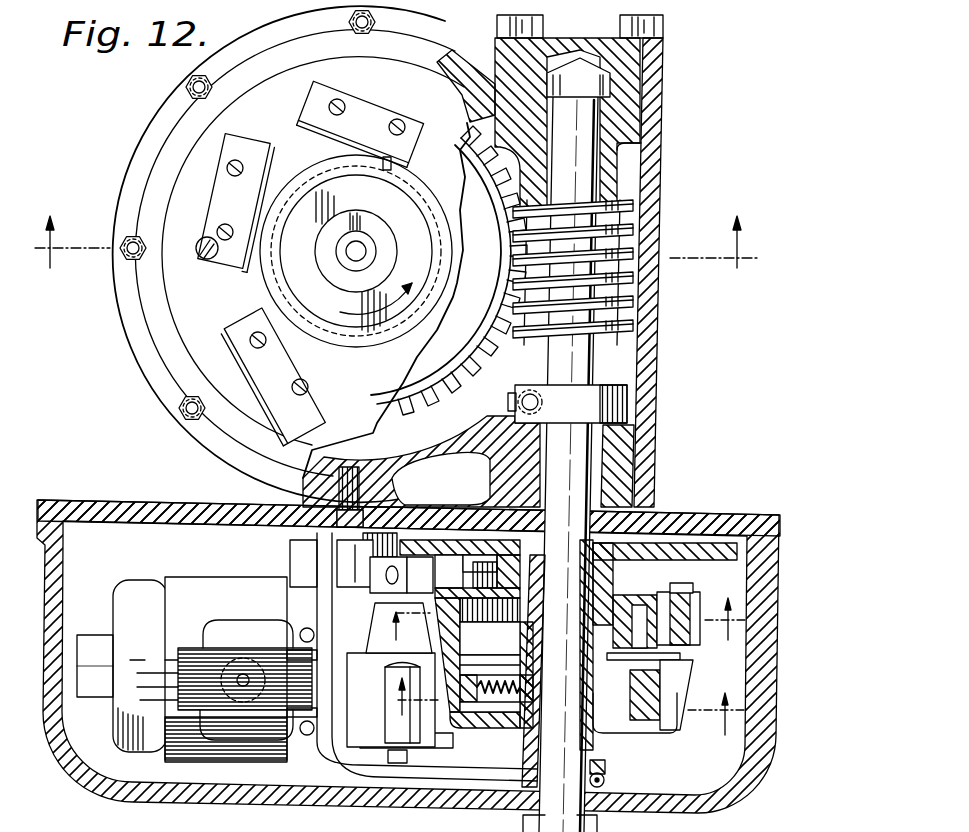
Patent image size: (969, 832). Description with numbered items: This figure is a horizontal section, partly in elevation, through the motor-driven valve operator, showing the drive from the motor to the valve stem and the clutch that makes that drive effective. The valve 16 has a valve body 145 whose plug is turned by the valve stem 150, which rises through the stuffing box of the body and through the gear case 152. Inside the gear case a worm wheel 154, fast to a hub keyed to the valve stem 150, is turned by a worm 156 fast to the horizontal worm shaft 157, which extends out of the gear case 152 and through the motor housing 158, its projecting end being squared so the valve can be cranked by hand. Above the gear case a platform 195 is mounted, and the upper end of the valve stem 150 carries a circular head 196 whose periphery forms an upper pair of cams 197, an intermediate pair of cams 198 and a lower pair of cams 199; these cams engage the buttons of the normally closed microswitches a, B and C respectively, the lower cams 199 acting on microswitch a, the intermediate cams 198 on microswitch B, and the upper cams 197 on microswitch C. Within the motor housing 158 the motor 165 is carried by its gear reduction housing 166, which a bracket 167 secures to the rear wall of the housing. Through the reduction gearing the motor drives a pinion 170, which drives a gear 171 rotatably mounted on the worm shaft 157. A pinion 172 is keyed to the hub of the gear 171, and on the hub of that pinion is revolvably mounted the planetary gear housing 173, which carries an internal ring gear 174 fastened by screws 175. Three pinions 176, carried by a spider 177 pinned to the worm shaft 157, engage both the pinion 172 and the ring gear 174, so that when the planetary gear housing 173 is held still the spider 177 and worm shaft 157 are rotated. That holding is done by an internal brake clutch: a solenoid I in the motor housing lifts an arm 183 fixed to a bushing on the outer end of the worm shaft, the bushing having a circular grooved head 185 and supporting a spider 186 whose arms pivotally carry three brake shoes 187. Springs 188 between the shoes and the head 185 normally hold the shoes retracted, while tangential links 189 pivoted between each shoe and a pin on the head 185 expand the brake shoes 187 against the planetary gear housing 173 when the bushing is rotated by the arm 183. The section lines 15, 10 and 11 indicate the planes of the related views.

The valve 16 is at (137, 152).
The gear case 152 is at (128, 190).
The valve body 145 is at (143, 345).
The platform 195 is at (205, 345).
The intermediate pair of salient counterpart cams 198 is at (272, 218).
The lower pair of salient counterpart cams 199 is at (333, 167).
The upper pair of salient counterpart cams 197 is at (265, 270).
The circular head 196 is at (328, 283).
The valve stem 150 is at (368, 238).
The microswitch A a is at (377, 108).
The microswitch B is at (218, 200).
The microswitch C is at (240, 322).
The worm 156 is at (630, 222).
The worm wheel 154 is at (567, 347).
The worm shaft 157 is at (603, 375).
The pinion 172 is at (653, 527).
The gear 171 is at (683, 533).
The internal ring gear 174 is at (730, 537).
The motor housing 158 is at (200, 797).
The motor 165 is at (195, 588).
The solenoid I is at (192, 667).
The pinion 170 is at (290, 556).
The bracket 167 is at (293, 563).
The arm 183 is at (363, 753).
The gear reduction housing 166 is at (386, 643).
The spider 177 is at (490, 671).
The springs 188 is at (455, 742).
The planetary gear housing 173 is at (678, 717).
The screws 175 is at (693, 585).
The pinions 176 is at (620, 657).
The circular grooved head 185 is at (627, 673).
The brake shoes 187 is at (663, 687).
The links 189 is at (630, 710).
The spider 186 is at (604, 778).
The section line 15 is at (408, 252).
The section line 10 is at (560, 628).
The section line 11 is at (567, 711).